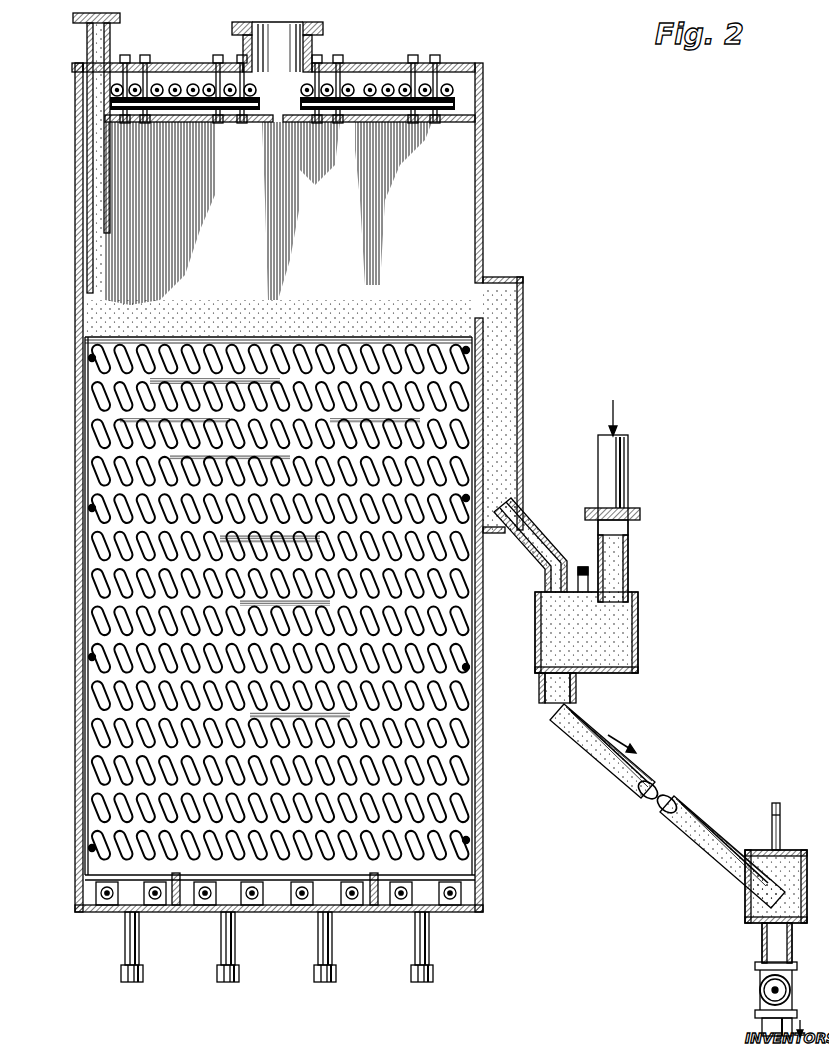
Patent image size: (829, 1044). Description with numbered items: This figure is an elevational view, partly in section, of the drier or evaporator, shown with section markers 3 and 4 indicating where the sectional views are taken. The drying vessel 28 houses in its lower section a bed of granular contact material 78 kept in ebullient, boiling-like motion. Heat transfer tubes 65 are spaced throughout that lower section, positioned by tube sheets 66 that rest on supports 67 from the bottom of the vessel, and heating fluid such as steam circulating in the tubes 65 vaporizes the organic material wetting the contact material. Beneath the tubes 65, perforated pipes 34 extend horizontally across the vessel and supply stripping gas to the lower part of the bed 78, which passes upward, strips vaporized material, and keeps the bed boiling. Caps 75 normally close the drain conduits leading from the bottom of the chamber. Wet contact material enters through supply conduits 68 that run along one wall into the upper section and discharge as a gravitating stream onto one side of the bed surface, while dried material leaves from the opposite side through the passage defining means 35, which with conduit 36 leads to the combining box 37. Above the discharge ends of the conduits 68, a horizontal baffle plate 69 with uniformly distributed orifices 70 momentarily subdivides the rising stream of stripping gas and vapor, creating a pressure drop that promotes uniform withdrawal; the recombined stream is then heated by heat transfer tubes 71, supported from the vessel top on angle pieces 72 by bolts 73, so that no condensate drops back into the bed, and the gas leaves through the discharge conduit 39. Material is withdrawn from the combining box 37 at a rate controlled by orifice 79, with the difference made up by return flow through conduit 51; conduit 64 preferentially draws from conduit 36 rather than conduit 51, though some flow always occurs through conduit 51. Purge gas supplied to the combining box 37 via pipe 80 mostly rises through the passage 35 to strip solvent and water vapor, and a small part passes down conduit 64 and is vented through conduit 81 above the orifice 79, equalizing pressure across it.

The section line 3- 3 is at (200, 1043).
The section line 4- 4 is at (41, 38).
The drying vessel 28 is at (483, 180).
The perforated pipes 34 is at (107, 906).
The passage defining means 35 is at (524, 331).
The conduit 36 is at (535, 526).
The combining box 37 is at (640, 639).
The discharge conduit 39 is at (323, 27).
The conduit 51 is at (629, 536).
The conduit 64 is at (648, 766).
The heat transfer tubes 65 is at (92, 560).
The tube sheets 66 is at (92, 859).
The supports 67 is at (178, 906).
The wet contact material supply conduits 68 is at (88, 205).
The horizontal baffle plate 69 is at (241, 125).
The orifices 70 is at (254, 123).
The heat transfer tubes 71 is at (455, 93).
The angle pieces 72 is at (388, 111).
The bolts 73 is at (450, 65).
The caps 75 is at (128, 979).
The bed of granular contact material 78 is at (92, 701).
The orifice 79 is at (759, 985).
The pipe 80 is at (583, 565).
The conduit 81 is at (782, 828).